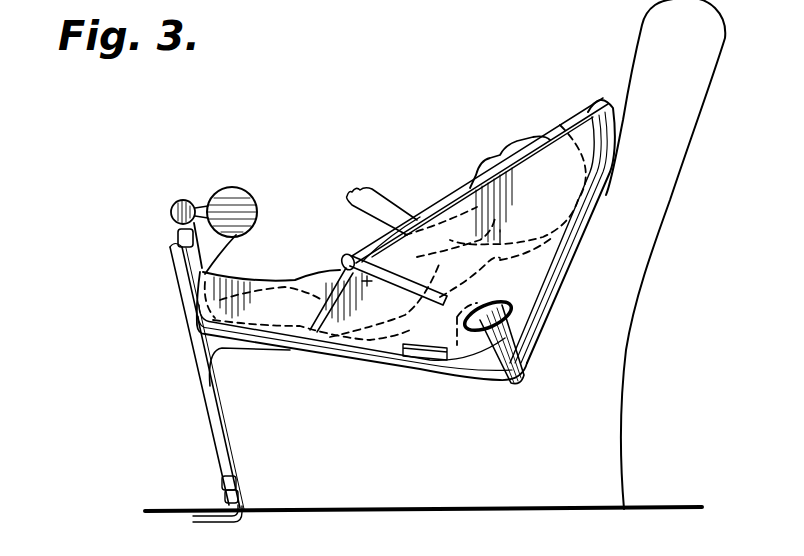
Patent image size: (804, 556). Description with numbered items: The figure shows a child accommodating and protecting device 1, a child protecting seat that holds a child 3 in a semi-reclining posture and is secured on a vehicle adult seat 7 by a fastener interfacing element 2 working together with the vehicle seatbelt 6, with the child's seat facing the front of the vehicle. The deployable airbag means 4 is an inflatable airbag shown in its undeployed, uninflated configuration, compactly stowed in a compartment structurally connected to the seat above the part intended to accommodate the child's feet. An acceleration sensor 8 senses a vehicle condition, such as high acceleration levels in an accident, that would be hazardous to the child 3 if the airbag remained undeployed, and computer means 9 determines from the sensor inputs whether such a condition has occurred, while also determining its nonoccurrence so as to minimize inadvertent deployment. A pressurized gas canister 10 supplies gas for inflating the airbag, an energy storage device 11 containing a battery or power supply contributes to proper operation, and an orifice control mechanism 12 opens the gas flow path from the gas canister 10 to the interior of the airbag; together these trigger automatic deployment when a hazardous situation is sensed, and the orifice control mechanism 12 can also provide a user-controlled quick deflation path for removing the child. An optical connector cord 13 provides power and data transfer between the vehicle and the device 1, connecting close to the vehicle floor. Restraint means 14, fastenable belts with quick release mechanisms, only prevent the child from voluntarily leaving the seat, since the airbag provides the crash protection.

The child accommodating and protecting device 1 is at (567, 117).
The fastener interfacing element 2 is at (505, 302).
The child 3 is at (489, 157).
The deployable airbag means 4 is at (231, 180).
The vehicle seatbelt 6 is at (512, 333).
The vehicle adult seat 7 is at (622, 452).
The acceleration sensor 8 is at (432, 357).
The computer means 9 is at (182, 274).
The pressurized gas canister 10 is at (171, 207).
The energy storage device 11 is at (178, 238).
The orifice control mechanism 12 is at (197, 195).
The optical connector cord 13 is at (222, 476).
The restraint means 14 is at (347, 256).